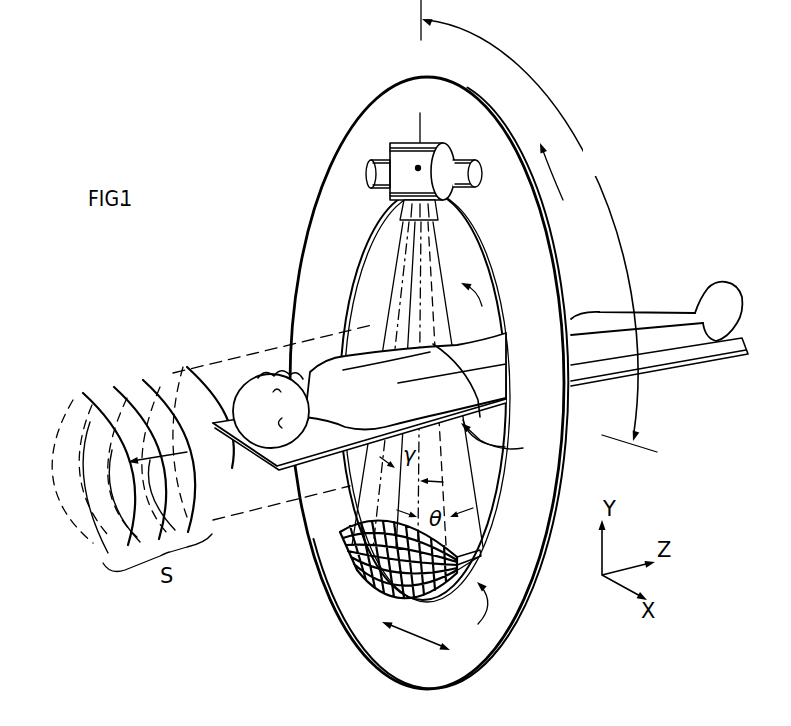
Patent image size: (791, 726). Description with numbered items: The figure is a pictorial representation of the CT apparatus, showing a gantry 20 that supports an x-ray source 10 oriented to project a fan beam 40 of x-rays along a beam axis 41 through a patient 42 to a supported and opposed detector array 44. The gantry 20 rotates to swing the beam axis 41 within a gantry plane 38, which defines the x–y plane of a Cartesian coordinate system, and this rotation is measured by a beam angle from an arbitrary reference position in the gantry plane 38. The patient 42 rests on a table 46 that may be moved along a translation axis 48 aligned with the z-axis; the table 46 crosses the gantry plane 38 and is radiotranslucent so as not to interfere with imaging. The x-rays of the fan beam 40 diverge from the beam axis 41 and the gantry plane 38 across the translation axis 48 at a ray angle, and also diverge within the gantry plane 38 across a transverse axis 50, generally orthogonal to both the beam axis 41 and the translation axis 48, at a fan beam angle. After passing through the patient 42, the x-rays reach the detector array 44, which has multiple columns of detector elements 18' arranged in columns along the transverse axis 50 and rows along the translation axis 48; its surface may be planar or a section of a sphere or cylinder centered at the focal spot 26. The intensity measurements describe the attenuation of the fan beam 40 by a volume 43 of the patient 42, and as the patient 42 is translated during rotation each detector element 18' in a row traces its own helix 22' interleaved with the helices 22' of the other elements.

The x-ray source 10 is at (478, 178).
The detector elements 18' is at (367, 571).
The gantry 20 is at (543, 490).
The helix 22' is at (212, 435).
The focal spot 26 is at (417, 167).
The gantry plane 38 is at (334, 76).
The fan beam 40 is at (478, 306).
The beam axis 41 is at (422, 128).
The patient 42 is at (702, 330).
The volume 43 is at (505, 440).
The detector array 44 is at (470, 610).
The table 46 is at (720, 340).
The translation axis 48 is at (187, 452).
The transverse axis 50 is at (415, 636).